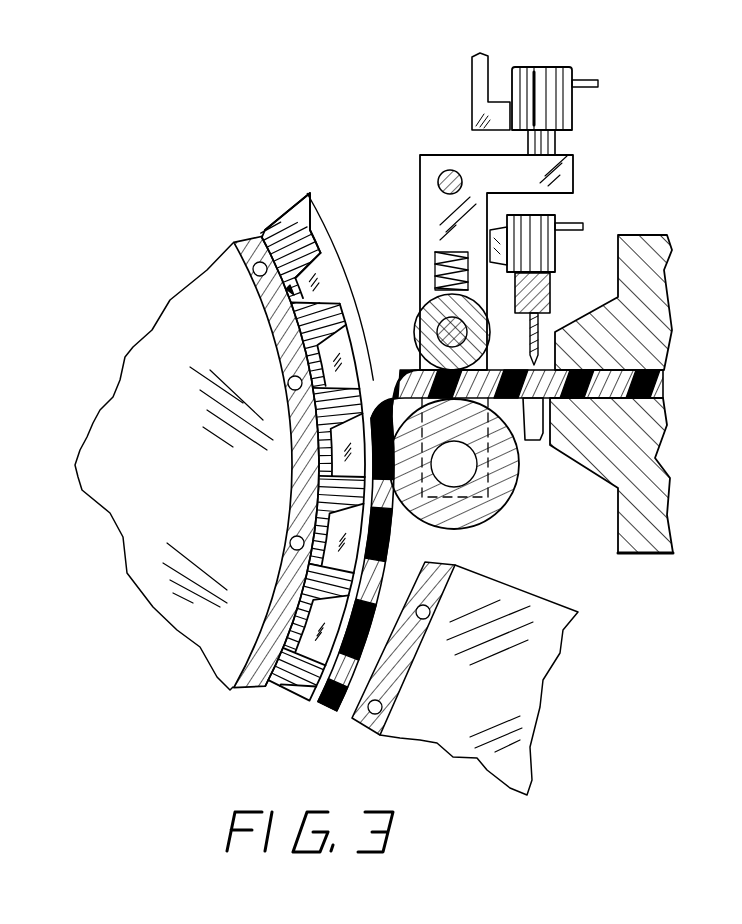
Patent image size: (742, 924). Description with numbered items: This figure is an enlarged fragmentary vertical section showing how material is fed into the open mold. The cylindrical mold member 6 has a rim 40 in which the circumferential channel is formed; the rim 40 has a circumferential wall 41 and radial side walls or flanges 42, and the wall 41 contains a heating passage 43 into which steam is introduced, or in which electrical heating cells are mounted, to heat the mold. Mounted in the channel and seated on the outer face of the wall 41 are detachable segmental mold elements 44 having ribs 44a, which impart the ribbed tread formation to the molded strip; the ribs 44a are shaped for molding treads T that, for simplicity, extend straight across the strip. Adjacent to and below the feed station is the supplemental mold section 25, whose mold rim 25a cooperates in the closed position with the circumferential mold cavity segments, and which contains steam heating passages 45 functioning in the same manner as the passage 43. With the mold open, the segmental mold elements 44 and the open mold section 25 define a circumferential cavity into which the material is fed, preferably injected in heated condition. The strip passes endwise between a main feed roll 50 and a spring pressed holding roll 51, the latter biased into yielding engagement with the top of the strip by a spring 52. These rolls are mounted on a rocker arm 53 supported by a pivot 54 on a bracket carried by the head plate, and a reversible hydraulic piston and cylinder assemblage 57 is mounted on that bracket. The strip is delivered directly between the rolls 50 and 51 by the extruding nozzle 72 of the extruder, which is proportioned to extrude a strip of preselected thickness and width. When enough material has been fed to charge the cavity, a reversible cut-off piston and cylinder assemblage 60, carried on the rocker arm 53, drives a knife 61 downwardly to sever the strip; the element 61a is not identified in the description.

The cylindrical mold member 6 is at (182, 307).
The supplemental mold section 25 is at (563, 652).
The mold rim 25a is at (443, 592).
The rim 40 is at (243, 246).
The circumferential wall 41 is at (275, 243).
The radial side walls or flanges 42 is at (327, 227).
The heating passage 43 is at (290, 381).
The segmental mold element 44 is at (290, 292).
The rib 44a is at (283, 232).
The steam heating passage 45 is at (403, 693).
The main feed roll 50 is at (501, 511).
The spring pressed holding roll 51 is at (425, 325).
The spring 52 is at (440, 318).
The rocker arm 53 is at (573, 182).
The pivot 54 is at (440, 178).
The reversible hydraulic piston and cylinder assemblage 57 is at (598, 83).
The reversible cut-off piston and cylinder assemblage 60 is at (558, 218).
The knife 61 is at (545, 327).
The stop 61a is at (540, 440).
The extruding nozzle 72 is at (640, 238).
The tread T is at (400, 370).